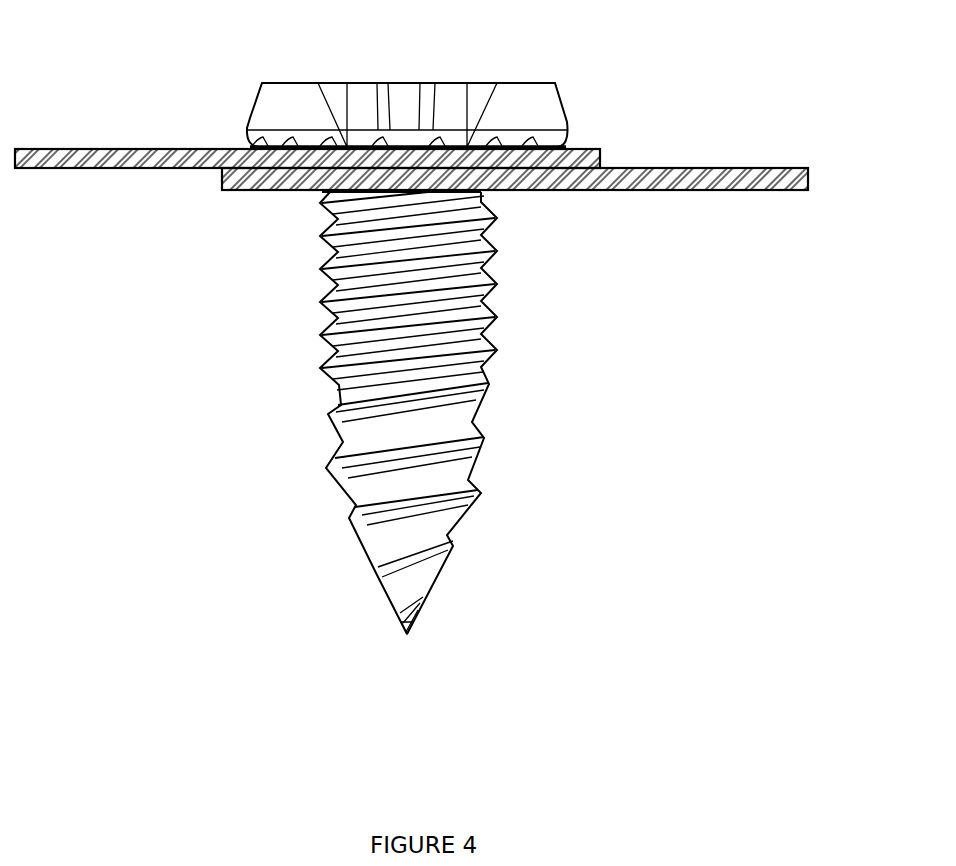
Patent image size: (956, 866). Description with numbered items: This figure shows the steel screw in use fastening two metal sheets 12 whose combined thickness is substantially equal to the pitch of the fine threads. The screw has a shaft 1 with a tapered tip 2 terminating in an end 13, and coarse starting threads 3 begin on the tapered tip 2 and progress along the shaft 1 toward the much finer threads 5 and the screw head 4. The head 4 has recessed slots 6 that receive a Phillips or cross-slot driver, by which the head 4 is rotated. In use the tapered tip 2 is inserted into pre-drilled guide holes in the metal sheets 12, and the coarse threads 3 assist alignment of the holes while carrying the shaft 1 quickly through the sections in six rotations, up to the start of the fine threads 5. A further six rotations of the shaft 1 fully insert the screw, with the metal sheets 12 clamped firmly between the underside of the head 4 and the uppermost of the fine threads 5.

The shaft 1 is at (485, 327).
The tapered tip 2 is at (458, 517).
The coarse starting threads 3 is at (365, 638).
The screw head 4 is at (566, 100).
The fine threads 5 is at (312, 200).
The recessed slots 6 is at (493, 72).
The metal sheets 12 is at (88, 149).
The end 13 is at (410, 633).